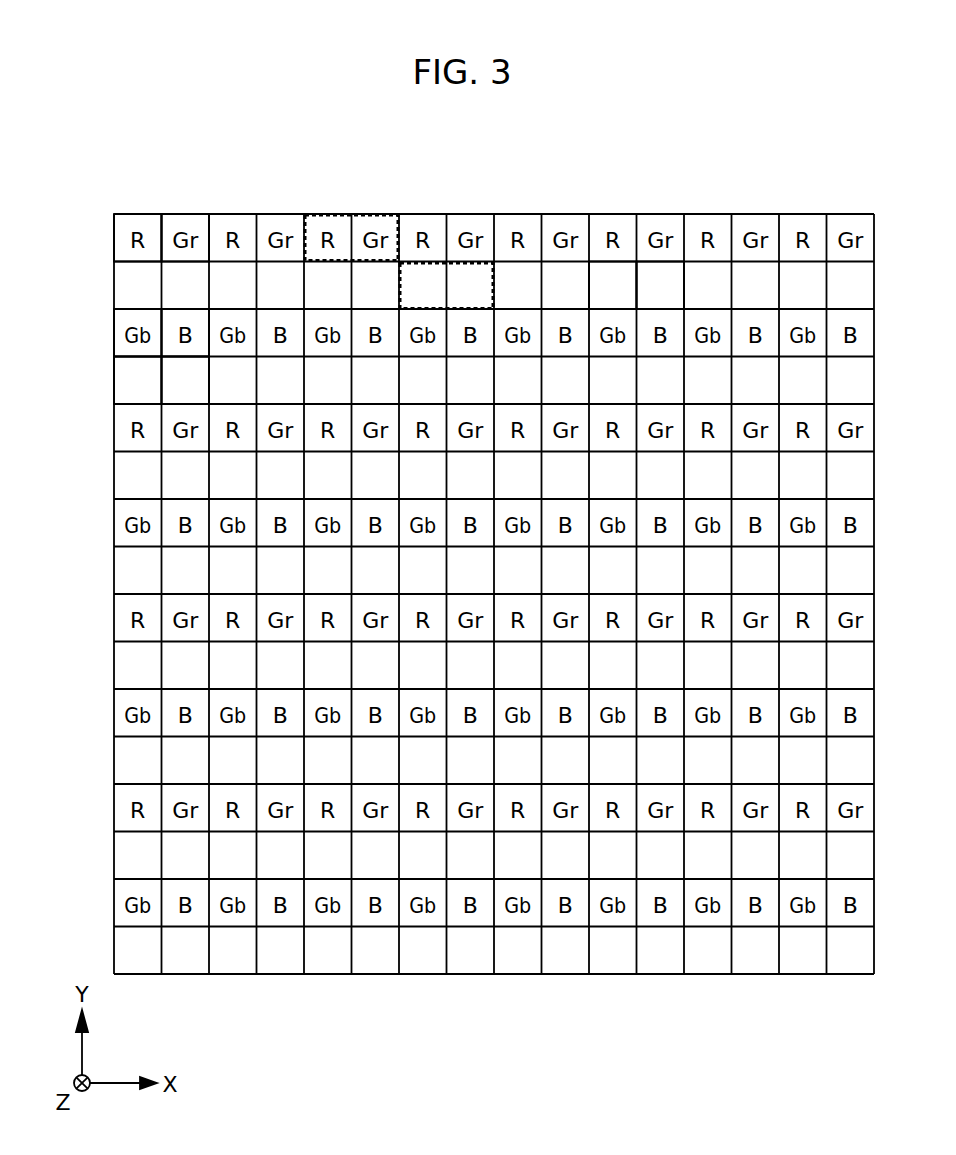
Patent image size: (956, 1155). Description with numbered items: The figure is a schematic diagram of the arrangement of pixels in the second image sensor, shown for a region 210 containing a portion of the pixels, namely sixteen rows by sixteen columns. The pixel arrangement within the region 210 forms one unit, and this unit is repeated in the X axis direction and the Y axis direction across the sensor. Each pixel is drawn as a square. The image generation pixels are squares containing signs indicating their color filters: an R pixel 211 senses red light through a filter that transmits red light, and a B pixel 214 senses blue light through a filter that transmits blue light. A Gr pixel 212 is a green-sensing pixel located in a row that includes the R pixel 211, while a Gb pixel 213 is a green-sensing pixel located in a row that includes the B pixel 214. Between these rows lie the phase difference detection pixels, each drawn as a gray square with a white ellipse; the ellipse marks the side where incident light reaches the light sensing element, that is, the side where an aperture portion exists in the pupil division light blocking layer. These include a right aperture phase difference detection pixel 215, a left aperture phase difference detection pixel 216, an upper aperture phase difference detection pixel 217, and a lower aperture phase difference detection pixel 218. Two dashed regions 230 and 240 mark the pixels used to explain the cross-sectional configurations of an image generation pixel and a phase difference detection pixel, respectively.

The region 210 is at (642, 130).
The R pixel 211 is at (139, 222).
The Gr pixel 212 is at (193, 222).
The Gb pixel 213 is at (116, 327).
The B pixel 214 is at (203, 322).
The right aperture phase difference detection pixel 215 is at (604, 270).
The left aperture phase difference detection pixel 216 is at (676, 270).
The upper aperture phase difference detection pixel 217 is at (118, 384).
The lower aperture phase difference detection pixel 218 is at (168, 383).
The region 230 is at (383, 214).
The region 240 is at (448, 262).